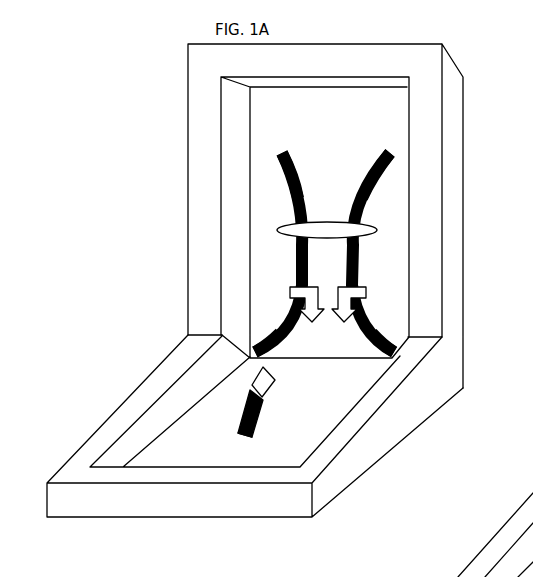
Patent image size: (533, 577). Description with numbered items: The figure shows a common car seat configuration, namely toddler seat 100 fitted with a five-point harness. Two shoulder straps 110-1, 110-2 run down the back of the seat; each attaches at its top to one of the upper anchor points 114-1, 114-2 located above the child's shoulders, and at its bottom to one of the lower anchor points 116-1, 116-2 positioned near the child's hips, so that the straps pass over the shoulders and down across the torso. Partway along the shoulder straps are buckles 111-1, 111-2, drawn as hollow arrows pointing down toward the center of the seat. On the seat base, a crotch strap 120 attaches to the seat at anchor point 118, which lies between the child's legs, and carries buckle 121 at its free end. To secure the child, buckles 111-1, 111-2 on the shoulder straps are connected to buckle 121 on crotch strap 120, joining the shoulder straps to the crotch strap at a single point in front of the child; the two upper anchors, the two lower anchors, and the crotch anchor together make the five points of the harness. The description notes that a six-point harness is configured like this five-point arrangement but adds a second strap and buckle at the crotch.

The toddler seat 100 is at (290, 109).
The shoulder strap 110-1 is at (278, 190).
The shoulder strap 110-2 is at (393, 189).
The upper anchor point 114-1 is at (262, 157).
The upper anchor point 114-2 is at (402, 154).
The lower anchor point 116-1 is at (238, 352).
The lower anchor point 116-2 is at (406, 350).
The buckle 111-1 is at (280, 291).
The buckle 111-2 is at (385, 294).
The crotch strap 120 is at (230, 415).
The buckle 121 is at (242, 383).
The anchor point 118 is at (237, 444).